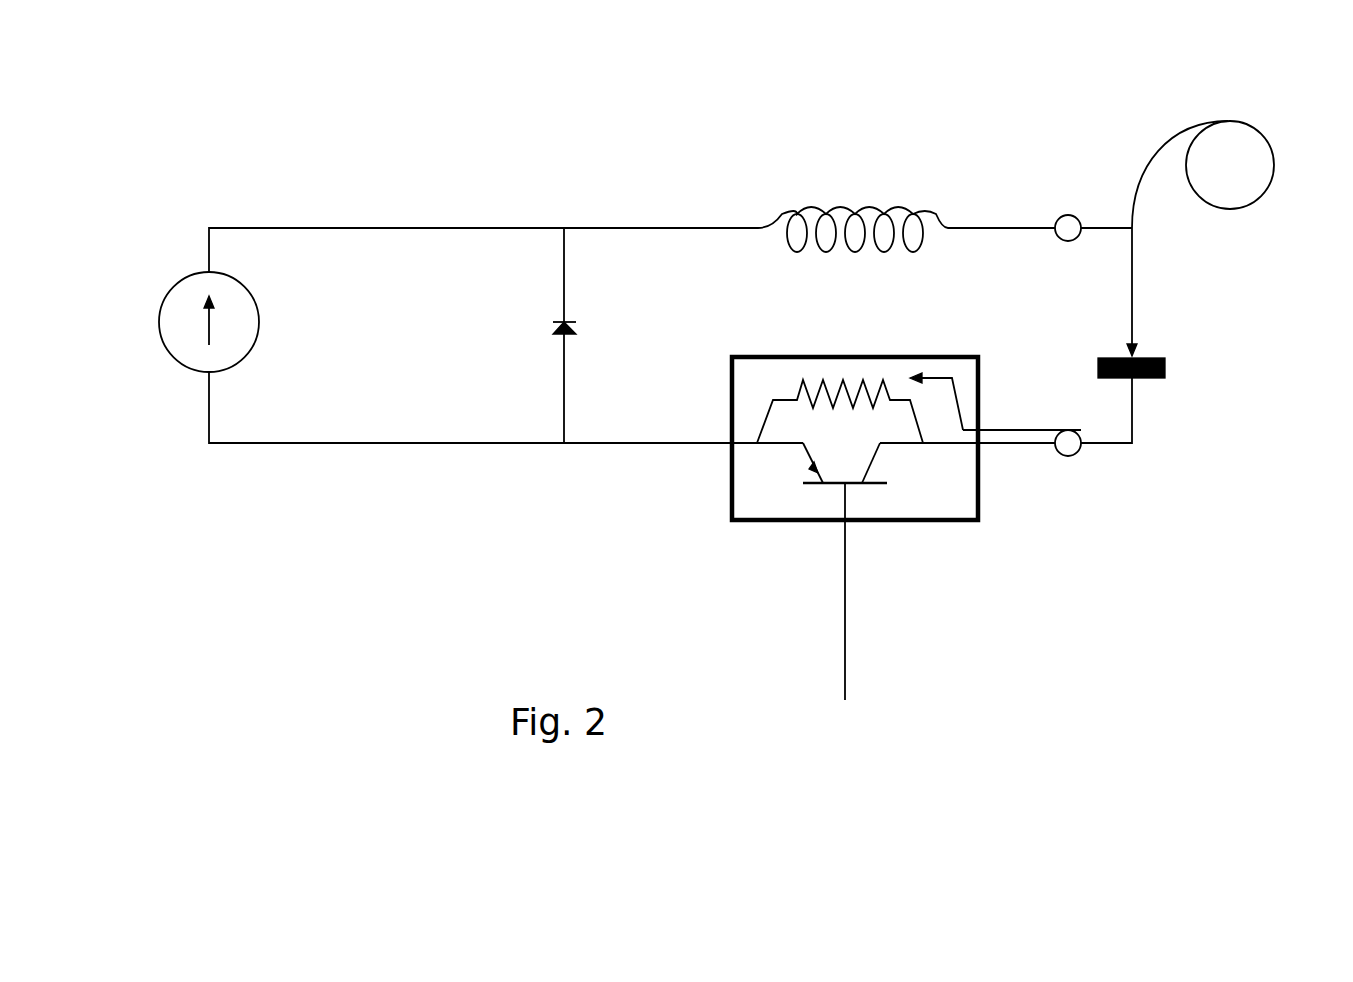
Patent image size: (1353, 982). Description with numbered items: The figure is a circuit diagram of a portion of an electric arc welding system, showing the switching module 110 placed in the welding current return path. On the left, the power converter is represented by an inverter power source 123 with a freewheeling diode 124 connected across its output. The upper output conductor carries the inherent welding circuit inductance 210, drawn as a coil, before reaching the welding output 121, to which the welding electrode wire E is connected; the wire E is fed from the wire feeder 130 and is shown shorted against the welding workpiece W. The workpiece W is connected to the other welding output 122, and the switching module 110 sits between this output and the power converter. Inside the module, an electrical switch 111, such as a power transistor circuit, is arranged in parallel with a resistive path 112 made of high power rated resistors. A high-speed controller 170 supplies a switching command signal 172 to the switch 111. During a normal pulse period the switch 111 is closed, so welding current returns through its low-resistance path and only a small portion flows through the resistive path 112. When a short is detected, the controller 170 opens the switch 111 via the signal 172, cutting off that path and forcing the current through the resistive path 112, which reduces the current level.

The switching module 110 is at (757, 522).
The electrical switch 111 is at (865, 485).
The resistive path 112 is at (800, 382).
The welding output 121 is at (1072, 215).
The welding output 122 is at (1077, 453).
The inverter power source 123 is at (173, 286).
The freewheeling diode 124 is at (559, 334).
The wire feeder 130 is at (1252, 122).
The high speed controller 170 is at (853, 756).
The switching command signal 172 is at (844, 632).
The welding circuit inductance 210 is at (797, 250).
The welding electrode wire E is at (1131, 277).
The welding workpiece W is at (1150, 378).